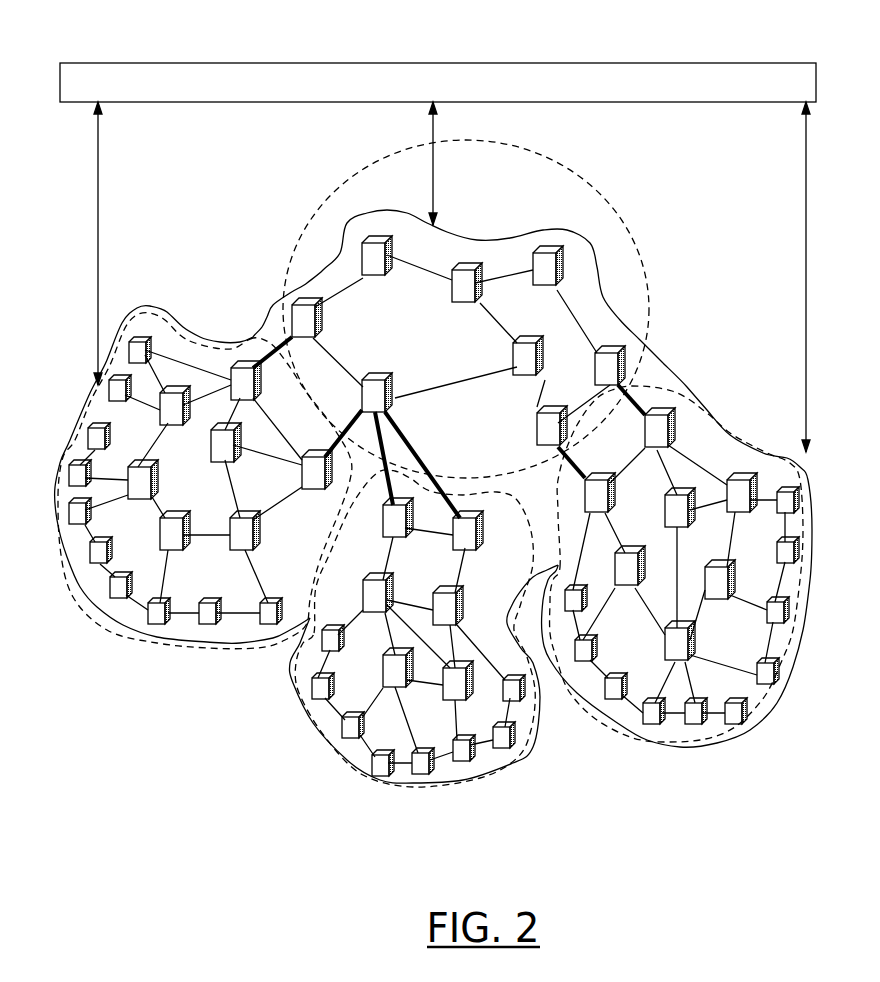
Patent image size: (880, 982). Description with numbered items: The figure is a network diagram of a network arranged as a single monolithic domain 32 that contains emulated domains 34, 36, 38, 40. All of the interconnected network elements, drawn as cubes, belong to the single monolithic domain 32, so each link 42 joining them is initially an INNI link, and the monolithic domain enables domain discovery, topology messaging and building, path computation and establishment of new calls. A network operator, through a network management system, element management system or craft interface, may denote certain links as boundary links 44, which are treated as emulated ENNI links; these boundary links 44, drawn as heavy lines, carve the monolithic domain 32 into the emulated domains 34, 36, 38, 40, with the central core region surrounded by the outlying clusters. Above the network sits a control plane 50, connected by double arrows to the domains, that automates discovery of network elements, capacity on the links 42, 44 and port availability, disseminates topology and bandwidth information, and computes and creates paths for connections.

The control plane 50 is at (260, 63).
The emulated domain 34 is at (622, 210).
The single monolithic domain 32 is at (603, 298).
The emulated domain 40 is at (213, 335).
The emulated domain 38 is at (310, 618).
The emulated domain 36 is at (680, 393).
The link 42 is at (702, 470).
The boundary link 44 is at (635, 403).